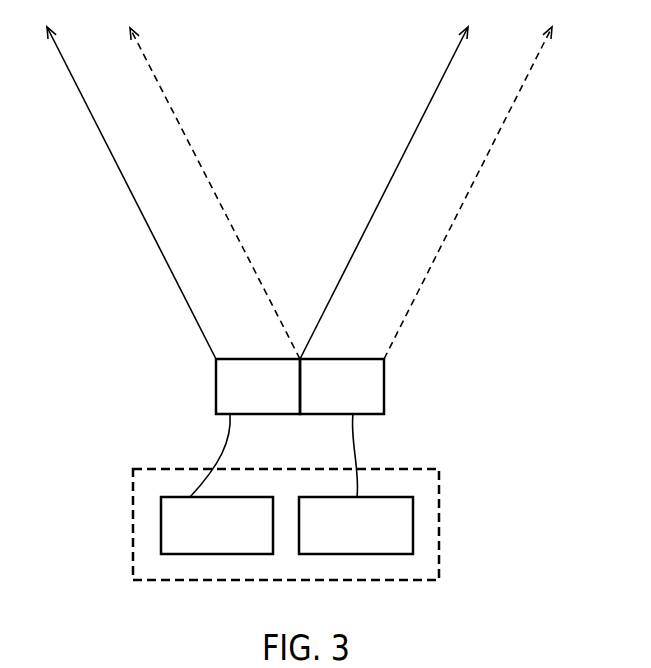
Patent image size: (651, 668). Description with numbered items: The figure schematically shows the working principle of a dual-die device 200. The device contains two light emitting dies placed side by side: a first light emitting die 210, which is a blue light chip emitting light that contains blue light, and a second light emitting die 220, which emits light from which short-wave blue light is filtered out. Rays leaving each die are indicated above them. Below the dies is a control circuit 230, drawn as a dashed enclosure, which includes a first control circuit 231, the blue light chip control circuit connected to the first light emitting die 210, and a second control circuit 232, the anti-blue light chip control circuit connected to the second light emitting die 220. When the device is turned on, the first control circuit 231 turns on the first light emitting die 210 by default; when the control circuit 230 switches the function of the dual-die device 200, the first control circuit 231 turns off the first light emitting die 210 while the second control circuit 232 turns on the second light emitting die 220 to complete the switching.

The dual-die device 200 is at (410, 415).
The first light emitting die 210 is at (342, 386).
The second light emitting die 220 is at (258, 386).
The control circuit 230 is at (133, 500).
The first control circuit 231 is at (356, 525).
The second control circuit 232 is at (217, 525).